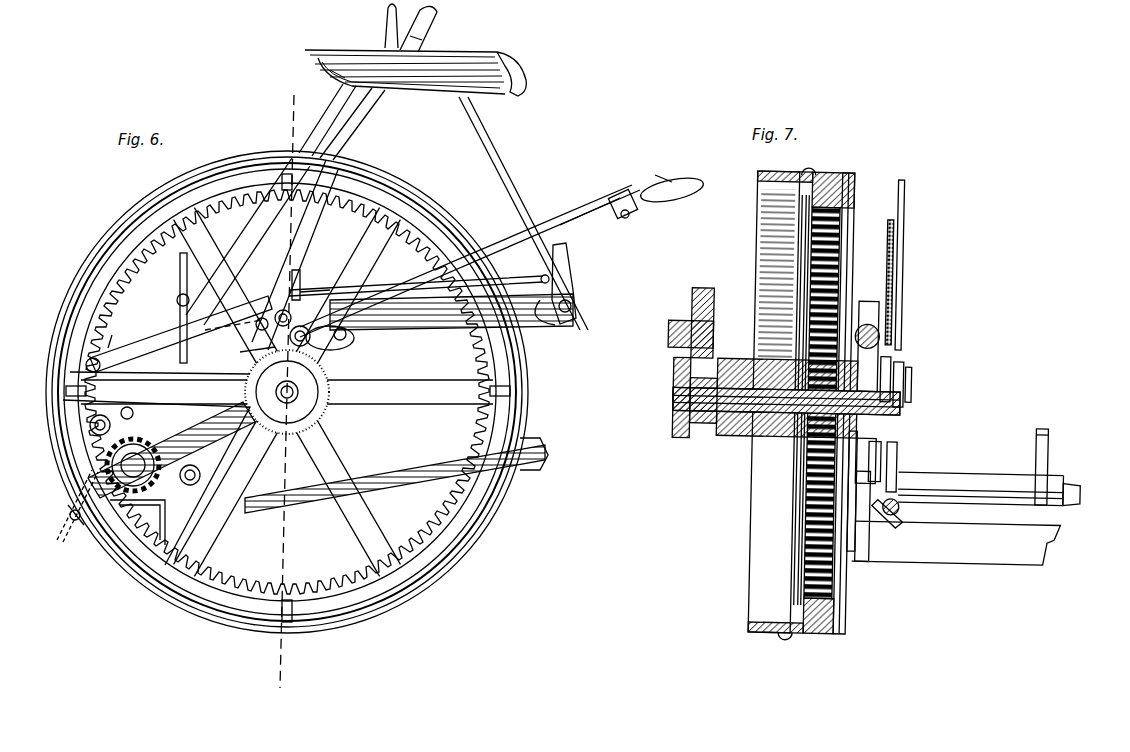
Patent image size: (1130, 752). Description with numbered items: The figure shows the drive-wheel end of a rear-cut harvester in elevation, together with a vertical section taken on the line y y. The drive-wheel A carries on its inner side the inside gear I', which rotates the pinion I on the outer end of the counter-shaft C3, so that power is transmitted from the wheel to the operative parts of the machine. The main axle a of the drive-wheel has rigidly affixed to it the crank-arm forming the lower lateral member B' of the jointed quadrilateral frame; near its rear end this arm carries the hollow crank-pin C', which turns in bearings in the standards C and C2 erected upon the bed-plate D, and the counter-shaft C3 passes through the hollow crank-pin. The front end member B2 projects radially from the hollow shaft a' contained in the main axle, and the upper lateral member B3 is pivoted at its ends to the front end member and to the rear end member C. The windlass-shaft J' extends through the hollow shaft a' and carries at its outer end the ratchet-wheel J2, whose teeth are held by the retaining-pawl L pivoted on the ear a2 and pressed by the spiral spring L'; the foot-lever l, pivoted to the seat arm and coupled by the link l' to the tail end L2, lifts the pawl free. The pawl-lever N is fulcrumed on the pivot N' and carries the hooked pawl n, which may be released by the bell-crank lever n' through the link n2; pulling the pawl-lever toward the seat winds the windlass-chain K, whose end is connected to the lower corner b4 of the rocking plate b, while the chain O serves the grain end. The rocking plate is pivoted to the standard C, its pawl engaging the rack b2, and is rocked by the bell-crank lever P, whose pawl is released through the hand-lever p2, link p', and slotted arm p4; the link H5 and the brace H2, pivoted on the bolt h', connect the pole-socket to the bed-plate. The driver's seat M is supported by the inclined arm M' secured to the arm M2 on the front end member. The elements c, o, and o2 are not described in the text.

In FIG. 6, the drive-wheel A is at (287, 392).
In FIG. 7, the drive-wheel A is at (782, 403).
In FIG. 7, the pinion I is at (777, 402).
In FIG. 6, the inside gear I' is at (287, 392).
In FIG. 7, the inside gear I' is at (769, 399).
In FIG. 6, the section line y y is at (282, 390).
In FIG. 6, the driver's seat M is at (415, 65).
In FIG. 6, the inclined arm M' is at (523, 213).
In FIG. 6, the arm M2 is at (451, 312).
In FIG. 6, the bell-crank lever P is at (313, 176).
In FIG. 7, the bell-crank lever P is at (886, 218).
In FIG. 6, the link p' is at (342, 122).
In FIG. 7, the link p' is at (914, 262).
In FIG. 6, the hand-lever p2 is at (379, 26).
In FIG. 7, the arm p4 is at (911, 385).
In FIG. 6, the pawl-lever N is at (502, 255).
In FIG. 7, the pawl-lever N is at (680, 315).
In FIG. 7, the pivot N' is at (670, 330).
In FIG. 6, the hooked pawl n is at (330, 346).
In FIG. 6, the bell-crank lever n' is at (663, 169).
In FIG. 6, the link n2 is at (589, 211).
In FIG. 6, the foot-lever l is at (561, 284).
In FIG. 6, the link l' is at (419, 278).
In FIG. 6, the retaining-pawl L is at (255, 345).
In FIG. 7, the retaining-pawl L is at (640, 363).
In FIG. 6, the spiral spring L' is at (236, 321).
In FIG. 6, the tail end of pawl L2 is at (311, 284).
In FIG. 7, the tail end of pawl L2 is at (705, 300).
In FIG. 6, the main axle a is at (300, 340).
In FIG. 7, the main axle a is at (786, 422).
In FIG. 6, the hollow shaft a' is at (276, 325).
In FIG. 7, the hollow shaft a' is at (721, 323).
In FIG. 7, the ear a2 is at (702, 365).
In FIG. 6, the lower lateral member B' is at (171, 450).
In FIG. 7, the lower lateral member B' is at (849, 508).
In FIG. 6, the front end member B2 is at (246, 308).
In FIG. 7, the front end member B2 is at (868, 319).
In FIG. 6, the upper lateral member B3 is at (179, 334).
In FIG. 7, the upper lateral member B3 is at (848, 250).
In FIG. 6, the rocking plate b is at (154, 403).
In FIG. 7, the rocking plate b is at (903, 372).
In FIG. 6, the rack b2 is at (145, 445).
In FIG. 7, the lower corner of oscillating plate b4 is at (863, 471).
In FIG. 6, the windlass-chain K is at (156, 425).
In FIG. 7, the windlass-chain K is at (876, 352).
In FIG. 6, the pinion c is at (125, 449).
In FIG. 7, the rear end member C is at (867, 516).
In FIG. 7, the hollow crank-pin C' is at (981, 487).
In FIG. 7, the standard C2 is at (1053, 467).
In FIG. 7, the counter-shaft C3 is at (1085, 492).
In FIG. 6, the bed-plate D is at (145, 518).
In FIG. 7, the bed-plate D is at (956, 543).
In FIG. 6, the pinion lever o is at (67, 513).
In FIG. 6, the lever pin o2 is at (63, 507).
In FIG. 7, the chain O is at (905, 490).
In FIG. 6, the brace H2 is at (466, 470).
In FIG. 6, the link H5 is at (395, 463).
In FIG. 7, the link H5 is at (911, 400).
In FIG. 7, the horizontal bolt h' is at (895, 515).
In FIG. 7, the windlass-shaft J' is at (636, 404).
In FIG. 7, the ratchet-wheel J2 is at (680, 440).